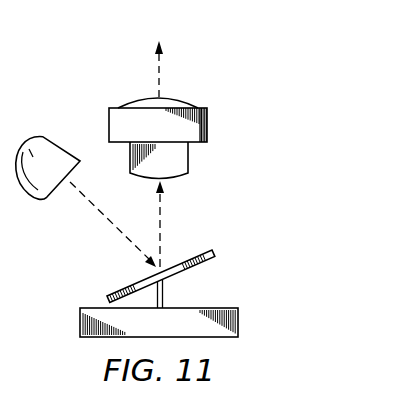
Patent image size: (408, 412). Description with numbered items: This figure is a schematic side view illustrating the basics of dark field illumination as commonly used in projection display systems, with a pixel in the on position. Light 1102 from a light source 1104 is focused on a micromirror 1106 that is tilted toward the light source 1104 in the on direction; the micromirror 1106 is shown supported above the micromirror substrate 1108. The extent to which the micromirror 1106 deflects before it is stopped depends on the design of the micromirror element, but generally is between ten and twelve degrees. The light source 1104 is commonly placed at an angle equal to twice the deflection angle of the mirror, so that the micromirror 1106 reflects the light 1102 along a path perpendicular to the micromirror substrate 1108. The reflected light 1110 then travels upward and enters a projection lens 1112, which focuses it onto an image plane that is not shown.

The light 1102 is at (93, 208).
The light source 1104 is at (43, 134).
The micromirror 1106 is at (216, 252).
The micromirror substrate 1108 is at (238, 322).
The reflected light 1110 is at (160, 214).
The projection lens 1112 is at (220, 121).